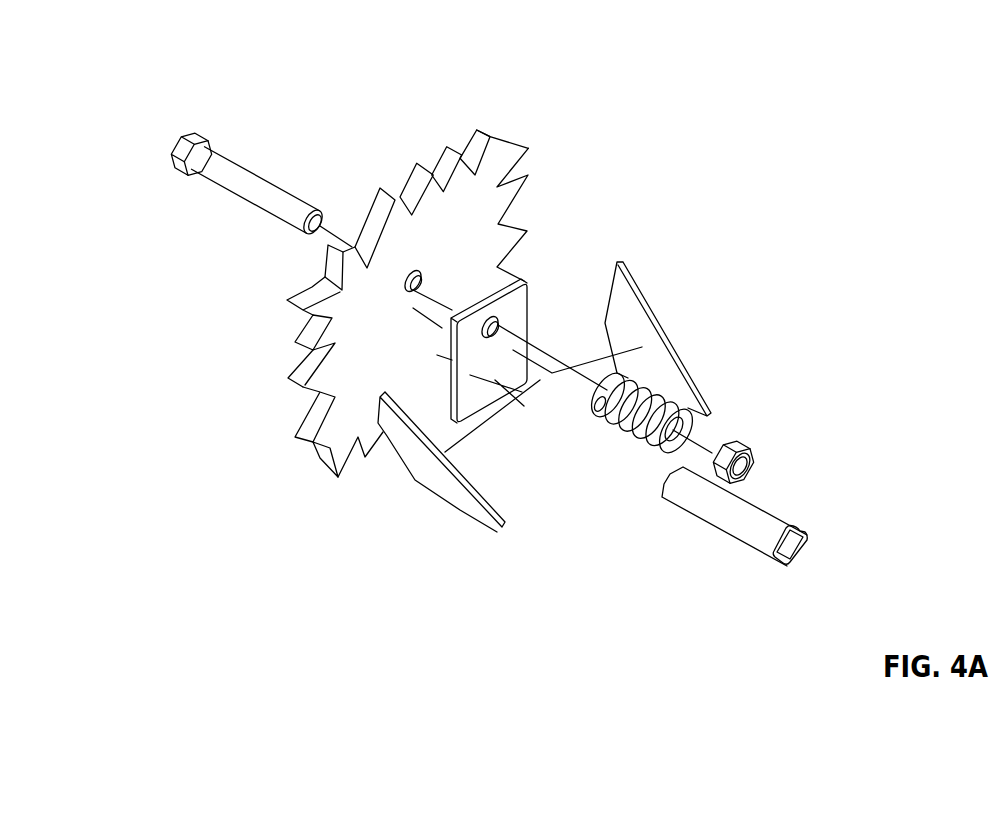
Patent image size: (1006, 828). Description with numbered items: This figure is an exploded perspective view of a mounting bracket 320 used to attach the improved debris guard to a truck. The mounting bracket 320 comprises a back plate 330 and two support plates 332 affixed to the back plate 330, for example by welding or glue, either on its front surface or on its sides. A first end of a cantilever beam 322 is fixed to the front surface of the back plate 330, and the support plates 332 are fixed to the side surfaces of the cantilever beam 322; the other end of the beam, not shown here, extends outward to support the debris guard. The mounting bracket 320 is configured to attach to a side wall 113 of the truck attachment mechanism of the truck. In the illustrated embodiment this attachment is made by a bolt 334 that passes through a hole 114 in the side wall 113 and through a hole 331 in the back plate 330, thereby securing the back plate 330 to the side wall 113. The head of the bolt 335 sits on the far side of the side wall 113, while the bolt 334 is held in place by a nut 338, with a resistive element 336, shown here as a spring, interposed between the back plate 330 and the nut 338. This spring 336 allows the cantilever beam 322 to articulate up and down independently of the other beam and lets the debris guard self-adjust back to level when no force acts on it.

The mounting bracket 320 is at (917, 95).
The bolt head 335 is at (181, 157).
The bolt 334 is at (288, 207).
The side wall 113 is at (325, 378).
The hole 114 is at (405, 287).
The back plate 330 is at (522, 302).
The hole 331 is at (497, 330).
The support plates 332 is at (650, 313).
The resistive element 336 is at (625, 420).
The nut 338 is at (742, 466).
The cantilever beam 322 is at (768, 530).